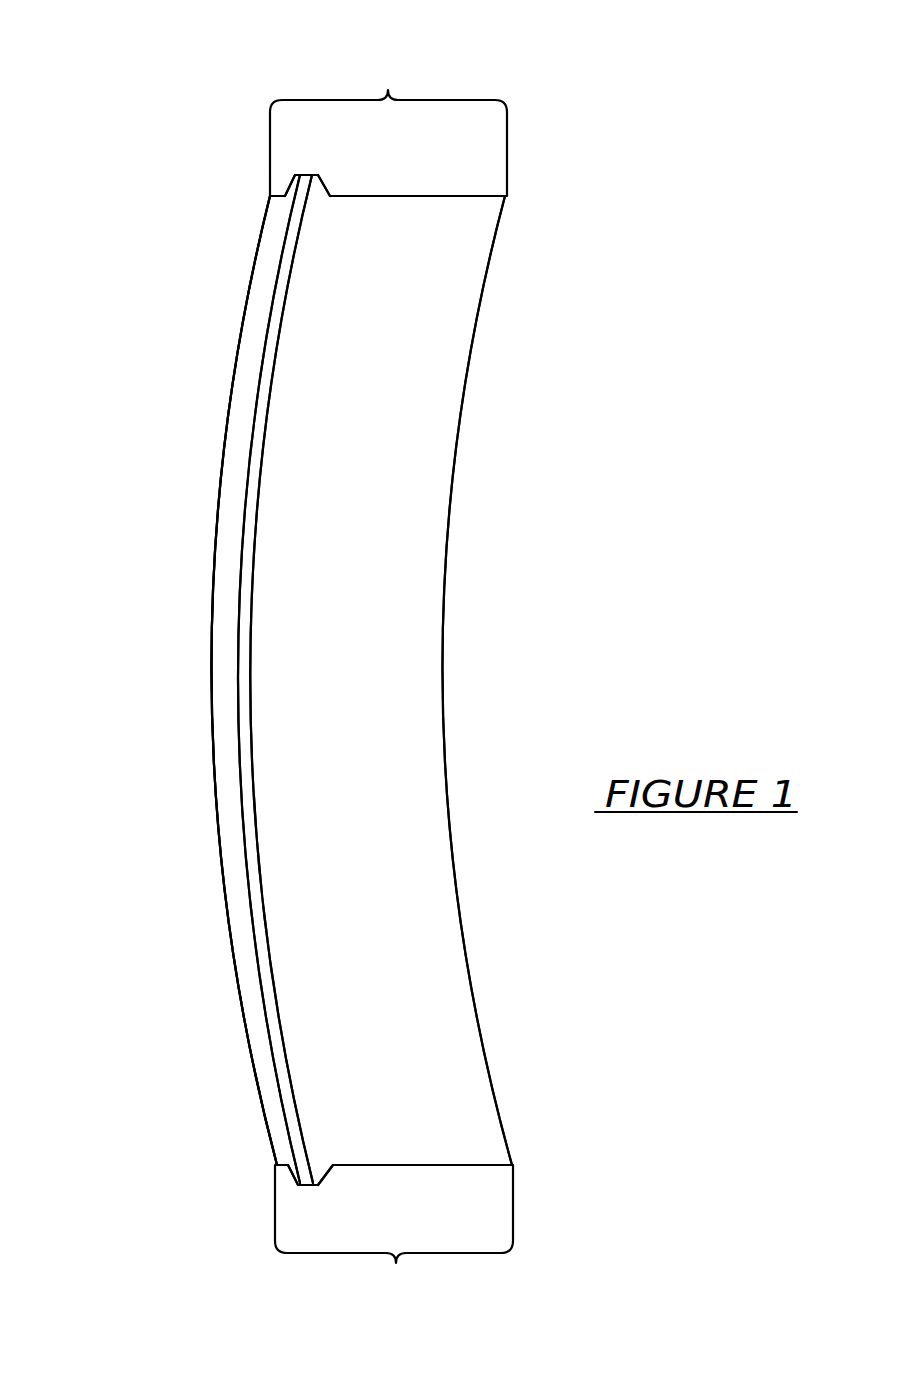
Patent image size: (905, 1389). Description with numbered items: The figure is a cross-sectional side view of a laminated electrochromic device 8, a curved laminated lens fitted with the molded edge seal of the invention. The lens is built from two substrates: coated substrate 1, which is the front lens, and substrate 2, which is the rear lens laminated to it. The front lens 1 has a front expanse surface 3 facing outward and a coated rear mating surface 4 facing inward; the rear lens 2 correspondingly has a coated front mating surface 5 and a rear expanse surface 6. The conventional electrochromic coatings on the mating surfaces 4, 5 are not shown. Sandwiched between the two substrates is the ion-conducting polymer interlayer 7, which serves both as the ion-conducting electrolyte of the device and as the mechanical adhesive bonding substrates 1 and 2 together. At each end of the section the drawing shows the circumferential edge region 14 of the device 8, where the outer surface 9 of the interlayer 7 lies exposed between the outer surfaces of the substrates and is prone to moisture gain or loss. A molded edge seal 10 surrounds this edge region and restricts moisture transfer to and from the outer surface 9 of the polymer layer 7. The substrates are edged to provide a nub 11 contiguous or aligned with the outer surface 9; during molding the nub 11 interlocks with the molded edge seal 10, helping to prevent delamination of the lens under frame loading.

The coated substrate 1 is at (232, 513).
The substrate 2 is at (365, 745).
The front expanse surface 3 is at (212, 612).
The coated rear mating surface 4 is at (240, 798).
The coated front mating surface 5 is at (248, 590).
The rear expanse surface 6 is at (465, 395).
The ion-conducting polymer interlayer 7 is at (255, 458).
The laminated electrochromic device 8 is at (205, 998).
The outer surface 9 is at (313, 175).
The molded edge seal 10 is at (287, 182).
The nub 11 is at (322, 192).
The circumferential edge region 14 is at (388, 90).